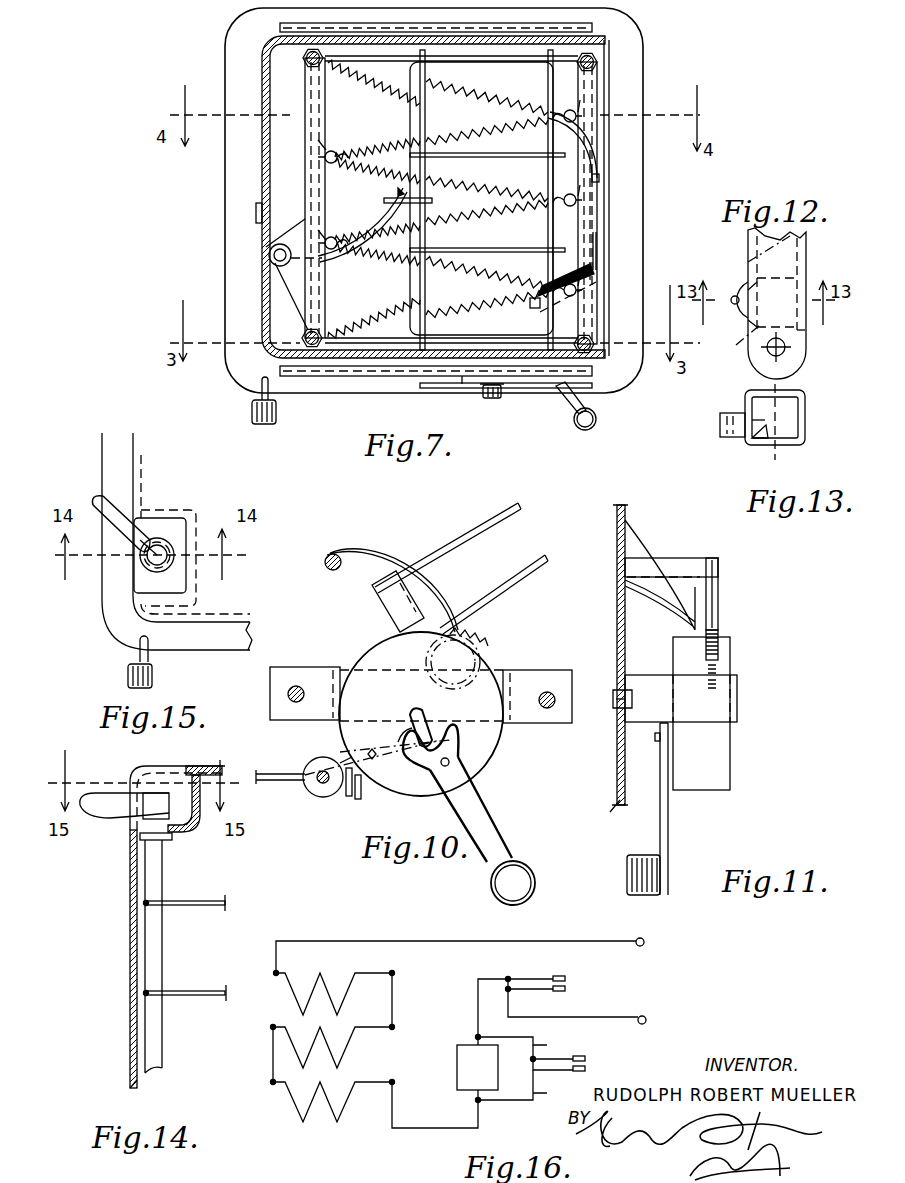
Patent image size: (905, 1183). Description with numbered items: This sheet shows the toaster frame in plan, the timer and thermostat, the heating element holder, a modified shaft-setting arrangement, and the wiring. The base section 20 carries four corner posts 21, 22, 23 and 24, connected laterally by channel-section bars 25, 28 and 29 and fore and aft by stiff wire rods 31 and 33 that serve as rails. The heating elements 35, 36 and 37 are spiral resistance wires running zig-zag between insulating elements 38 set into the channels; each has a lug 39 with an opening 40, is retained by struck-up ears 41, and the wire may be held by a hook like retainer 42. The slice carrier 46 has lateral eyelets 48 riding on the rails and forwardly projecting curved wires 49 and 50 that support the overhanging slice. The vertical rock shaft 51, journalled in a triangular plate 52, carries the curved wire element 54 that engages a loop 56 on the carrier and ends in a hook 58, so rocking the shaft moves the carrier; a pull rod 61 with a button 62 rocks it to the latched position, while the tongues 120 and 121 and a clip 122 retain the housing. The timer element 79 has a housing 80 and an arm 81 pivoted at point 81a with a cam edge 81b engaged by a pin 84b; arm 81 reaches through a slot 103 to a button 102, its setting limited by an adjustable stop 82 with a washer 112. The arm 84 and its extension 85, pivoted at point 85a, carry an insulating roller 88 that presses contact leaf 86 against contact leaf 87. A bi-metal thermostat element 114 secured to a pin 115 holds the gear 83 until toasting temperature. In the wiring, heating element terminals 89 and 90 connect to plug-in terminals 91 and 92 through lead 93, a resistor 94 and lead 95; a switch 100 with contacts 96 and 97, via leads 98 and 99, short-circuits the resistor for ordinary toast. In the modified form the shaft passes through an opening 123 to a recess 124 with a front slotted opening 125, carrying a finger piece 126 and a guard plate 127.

In FIG. 7, the base section 20 is at (216, 257).
In FIG. 15, the base section 20 is at (94, 467).
In FIG. 7, the corner post 21 is at (596, 344).
In FIG. 7, the corner post 22 is at (310, 350).
In FIG. 7, the corner post 23 is at (600, 62).
In FIG. 7, the corner post 24 is at (272, 52).
In FIG. 7, the bar 25 is at (598, 222).
In FIG. 7, the bar 28 is at (305, 181).
In FIG. 12, the bar 29 is at (748, 248).
In FIG. 13, the bar 29 is at (806, 414).
In FIG. 7, the bar 31 is at (368, 343).
In FIG. 7, the bar 33 is at (392, 60).
In FIG. 7, the heating element 35 is at (468, 104).
In FIG. 16, the heating element 35 is at (332, 977).
In FIG. 16, the heating element 36 is at (298, 1027).
In FIG. 16, the heating element 37 is at (326, 1116).
In FIG. 7, the insulating element 38 is at (316, 148).
In FIG. 12, the insulating element 38 is at (785, 280).
In FIG. 13, the insulating element 38 is at (790, 448).
In FIG. 12, the lug 39 is at (738, 318).
In FIG. 13, the lug 39 is at (722, 425).
In FIG. 12, the opening 40 is at (734, 296).
In FIG. 13, the opening 40 is at (742, 414).
In FIG. 12, the ears or lugs 41 is at (780, 244).
In FIG. 13, the ears or lugs 41 is at (752, 445).
In FIG. 7, the hook like retainer 42 is at (334, 151).
In FIG. 7, the slice carrier 46 is at (503, 238).
In FIG. 7, the lateral eyelets or hooks 48 is at (440, 352).
In FIG. 7, the curved wire 49 is at (598, 236).
In FIG. 7, the curved wire 50 is at (596, 185).
In FIG. 7, the rock shaft 51 is at (269, 258).
In FIG. 15, the rock shaft 51 is at (162, 550).
In FIG. 14, the rock shaft 51 is at (154, 880).
In FIG. 7, the triangular plate 52 is at (294, 282).
In FIG. 7, the curved stiff wire element or cam 54 is at (343, 258).
In FIG. 7, the loop or finger 56 is at (384, 200).
In FIG. 7, the hook 58 is at (396, 190).
In FIG. 7, the pull rod 61 is at (262, 393).
In FIG. 15, the pull rod 61 is at (140, 655).
In FIG. 7, the button 62 is at (252, 421).
In FIG. 15, the button 62 is at (128, 677).
In FIG. 10, the timer element 79 is at (362, 654).
In FIG. 11, the timer element 79 is at (739, 766).
In FIG. 10, the housing 80 is at (421, 714).
In FIG. 11, the housing 80 is at (701, 713).
In FIG. 7, the arm 81 is at (567, 396).
In FIG. 10, the arm 81 is at (478, 818).
In FIG. 11, the arm 81 is at (668, 818).
In FIG. 10, the pivot point 81a is at (450, 760).
In FIG. 10, the cam surface or edge 81b is at (410, 755).
In FIG. 7, the adjustable stop 82 is at (488, 398).
In FIG. 10, the gear 83 is at (478, 644).
In FIG. 11, the gear 83 is at (719, 640).
In FIG. 10, the arm 84 is at (355, 754).
In FIG. 10, the pin 84b is at (448, 733).
In FIG. 10, the extension 85 is at (276, 773).
In FIG. 10, the pivot point 85a is at (372, 749).
In FIG. 10, the contact leaf 86 is at (346, 795).
In FIG. 16, the contact leaf 86 is at (565, 975).
In FIG. 10, the contact leaf 87 is at (358, 800).
In FIG. 16, the contact leaf 87 is at (565, 992).
In FIG. 10, the insulating roller 88 is at (314, 785).
In FIG. 16, the heating element terminal 89 is at (392, 1082).
In FIG. 16, the heating element terminal 90 is at (440, 964).
In FIG. 16, the plug-in terminal 91 is at (645, 942).
In FIG. 16, the plug-in terminal 92 is at (647, 1016).
In FIG. 16, the lead 93 is at (590, 1018).
In FIG. 16, the resistor 94 is at (477, 1074).
In FIG. 16, the lead 95 is at (478, 1006).
In FIG. 16, the contact 96 is at (585, 1059).
In FIG. 16, the contact 97 is at (585, 1069).
In FIG. 16, the lead 98 is at (525, 1045).
In FIG. 16, the lead 99 is at (525, 1086).
In FIG. 16, the switch 100 is at (634, 1065).
In FIG. 7, the button 102 is at (597, 419).
In FIG. 10, the button 102 is at (520, 883).
In FIG. 11, the button 102 is at (627, 892).
In FIG. 7, the slot 103 is at (533, 393).
In FIG. 7, the washer 112 is at (462, 385).
In FIG. 10, the bi-metal thermostat element 114 is at (430, 600).
In FIG. 11, the bi-metal thermostat element 114 is at (719, 600).
In FIG. 10, the pin 115 is at (326, 564).
In FIG. 11, the pin 115 is at (664, 560).
In FIG. 7, the tongue 120 is at (327, 378).
In FIG. 7, the tongue 121 is at (281, 27).
In FIG. 7, the clip 122 is at (257, 211).
In FIG. 14, the opening 123 is at (172, 838).
In FIG. 15, the recess 124 is at (136, 580).
In FIG. 14, the recess 124 is at (172, 774).
In FIG. 15, the front slotted opening 125 is at (190, 588).
In FIG. 14, the front slotted opening 125 is at (190, 803).
In FIG. 15, the finger piece 126 is at (115, 515).
In FIG. 14, the finger piece 126 is at (104, 808).
In FIG. 15, the guard plate 127 is at (165, 545).
In FIG. 14, the guard plate 127 is at (190, 821).